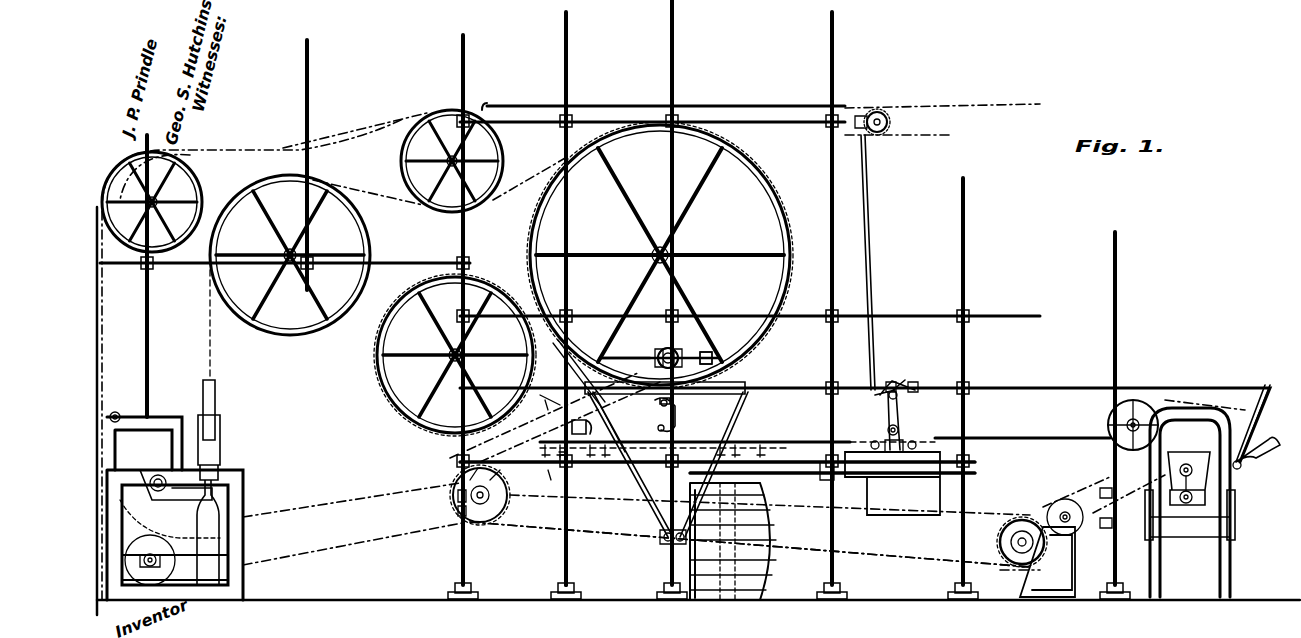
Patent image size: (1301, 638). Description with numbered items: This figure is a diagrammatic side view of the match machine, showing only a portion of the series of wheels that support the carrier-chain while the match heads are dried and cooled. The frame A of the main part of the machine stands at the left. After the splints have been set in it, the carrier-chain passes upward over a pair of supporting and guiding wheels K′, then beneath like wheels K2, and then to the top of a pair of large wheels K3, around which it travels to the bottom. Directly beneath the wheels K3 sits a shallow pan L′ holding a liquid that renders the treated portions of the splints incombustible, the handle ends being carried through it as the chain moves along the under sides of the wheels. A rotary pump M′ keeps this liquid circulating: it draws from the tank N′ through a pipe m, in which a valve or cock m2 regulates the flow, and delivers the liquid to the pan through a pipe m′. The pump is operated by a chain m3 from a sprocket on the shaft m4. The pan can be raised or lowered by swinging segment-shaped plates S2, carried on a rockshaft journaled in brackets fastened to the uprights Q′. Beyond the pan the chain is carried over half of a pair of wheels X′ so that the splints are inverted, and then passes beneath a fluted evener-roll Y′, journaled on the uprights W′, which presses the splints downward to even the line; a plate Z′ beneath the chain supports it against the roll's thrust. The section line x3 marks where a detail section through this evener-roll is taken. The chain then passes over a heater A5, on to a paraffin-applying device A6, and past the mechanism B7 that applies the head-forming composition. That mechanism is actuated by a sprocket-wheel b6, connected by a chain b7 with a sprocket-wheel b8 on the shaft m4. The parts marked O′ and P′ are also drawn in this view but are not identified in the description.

The supporting and guiding wheels K′ is at (257, 193).
The supporting and guiding wheels K2 is at (504, 160).
The large wheels K3 is at (784, 212).
The pump M′ is at (685, 345).
The pipe m′ is at (640, 360).
The valve or cock m2 is at (678, 356).
The pipe m is at (718, 355).
The shallow pan L′ is at (748, 386).
The lever arm O′ is at (735, 432).
The wheels X′ is at (395, 400).
The chain m3 is at (548, 407).
The section line x3 is at (554, 448).
The evener-roll Y′ is at (581, 416).
The segment-shaped plate S2 is at (656, 420).
The plate Z′ is at (575, 466).
The uprights W′ is at (566, 568).
The uprights Q′ is at (670, 510).
The pivot P′ is at (665, 548).
The sprocket-wheel b8 is at (500, 482).
The shaft m4 is at (478, 522).
The chain b7 is at (543, 525).
The frame A is at (240, 505).
The tank N′ is at (752, 541).
The heater A5 is at (792, 476).
The paraffin-applying device A6 is at (892, 447).
The sprocket-wheel b6 is at (1022, 520).
The composition-applying mechanism B7 is at (1243, 486).